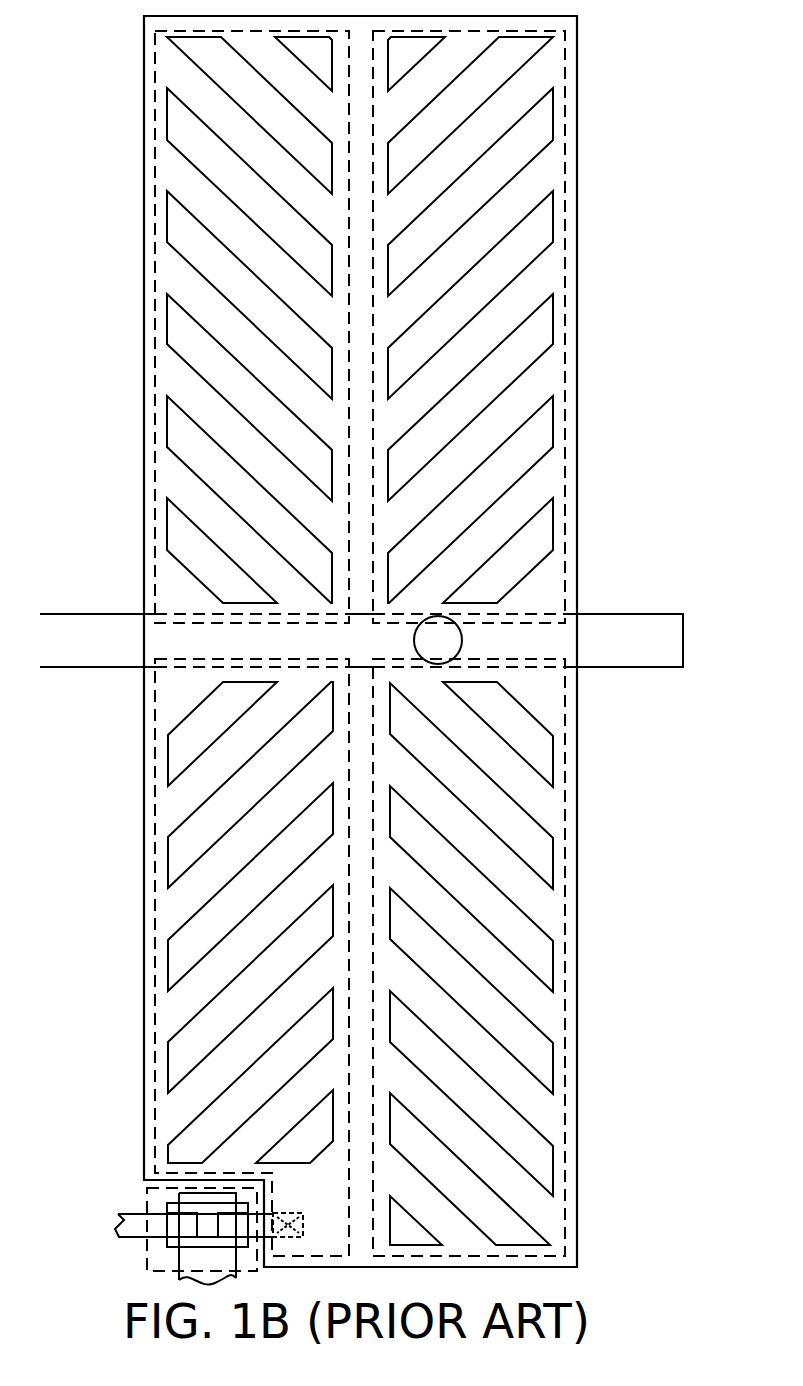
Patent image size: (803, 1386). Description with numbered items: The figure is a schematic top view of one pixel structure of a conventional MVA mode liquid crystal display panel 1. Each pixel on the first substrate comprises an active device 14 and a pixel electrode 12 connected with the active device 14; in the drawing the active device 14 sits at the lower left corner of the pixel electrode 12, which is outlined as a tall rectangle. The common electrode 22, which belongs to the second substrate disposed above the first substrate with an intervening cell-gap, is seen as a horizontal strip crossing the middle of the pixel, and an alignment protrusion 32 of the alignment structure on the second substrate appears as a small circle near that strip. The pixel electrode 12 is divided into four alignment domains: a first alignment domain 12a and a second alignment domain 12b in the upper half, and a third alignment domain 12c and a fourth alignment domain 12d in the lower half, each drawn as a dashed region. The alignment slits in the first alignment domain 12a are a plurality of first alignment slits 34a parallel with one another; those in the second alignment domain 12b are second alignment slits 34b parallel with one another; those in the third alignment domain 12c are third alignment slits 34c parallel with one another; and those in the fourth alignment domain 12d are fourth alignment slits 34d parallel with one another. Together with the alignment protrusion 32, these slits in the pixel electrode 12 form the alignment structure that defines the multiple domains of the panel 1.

The MVA mode liquid crystal display panel 1 is at (399, 656).
The pixel electrode 12 is at (143, 190).
The first alignment domain 12a is at (157, 101).
The second alignment domain 12b is at (562, 98).
The third alignment domain 12c is at (157, 736).
The fourth alignment domain 12d is at (563, 728).
The active device 14 is at (150, 1252).
The common electrode 22 is at (672, 638).
The alignment protrusion 32 is at (450, 639).
The first alignment slits 34a is at (190, 337).
The second alignment slits 34b is at (532, 334).
The third alignment slits 34c is at (186, 943).
The fourth alignment slits 34d is at (530, 949).